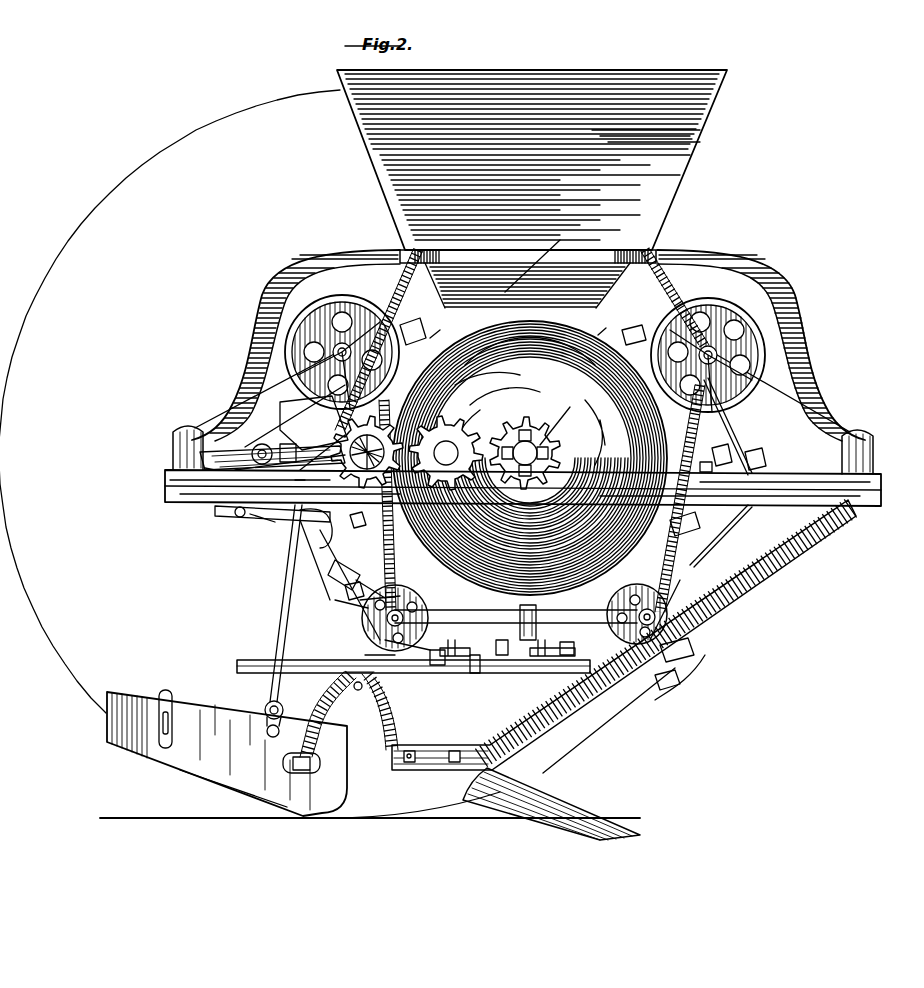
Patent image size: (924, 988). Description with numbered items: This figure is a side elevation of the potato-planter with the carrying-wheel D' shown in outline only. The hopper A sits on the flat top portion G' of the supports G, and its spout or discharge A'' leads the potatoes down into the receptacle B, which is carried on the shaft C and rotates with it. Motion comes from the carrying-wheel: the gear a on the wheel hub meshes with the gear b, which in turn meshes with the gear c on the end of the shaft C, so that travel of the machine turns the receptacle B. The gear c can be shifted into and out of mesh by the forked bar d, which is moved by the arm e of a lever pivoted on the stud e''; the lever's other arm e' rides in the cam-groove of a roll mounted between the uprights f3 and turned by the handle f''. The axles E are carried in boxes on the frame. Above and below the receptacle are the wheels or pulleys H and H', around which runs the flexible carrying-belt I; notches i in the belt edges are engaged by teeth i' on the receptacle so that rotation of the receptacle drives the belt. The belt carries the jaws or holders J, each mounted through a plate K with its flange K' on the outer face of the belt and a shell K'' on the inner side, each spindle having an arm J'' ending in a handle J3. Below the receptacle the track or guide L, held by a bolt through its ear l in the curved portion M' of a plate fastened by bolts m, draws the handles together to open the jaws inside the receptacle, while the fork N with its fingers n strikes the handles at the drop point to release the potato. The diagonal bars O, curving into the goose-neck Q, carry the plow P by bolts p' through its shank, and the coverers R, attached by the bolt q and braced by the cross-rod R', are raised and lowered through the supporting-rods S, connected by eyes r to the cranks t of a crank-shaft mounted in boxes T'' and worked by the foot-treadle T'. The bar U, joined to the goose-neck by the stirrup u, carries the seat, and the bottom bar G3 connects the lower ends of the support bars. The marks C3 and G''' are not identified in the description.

The hopper A is at (532, 160).
The spout A'' is at (537, 254).
The flat top portion of supports G' is at (603, 269).
The supports G is at (528, 345).
The wheels or pulleys H is at (527, 353).
The carrying-wheel D' is at (250, 454).
The flange or projection of plate K' is at (518, 450).
The plate K is at (523, 503).
The axles E is at (299, 486).
The carrying-belt I is at (544, 431).
The receptacle B is at (530, 458).
The gear a is at (367, 452).
The gear b is at (446, 453).
The gear c is at (525, 453).
The shaft C is at (560, 416).
The handle or lever f'' is at (241, 462).
The uprights f3 is at (275, 462).
The bar d is at (296, 416).
The arm of lever e' is at (264, 439).
The arm of lever e is at (288, 435).
The foot treadle or lever T' is at (246, 518).
The boxes T'' is at (240, 526).
The stud or pin e'' is at (291, 528).
The curved central portion of plate M' is at (513, 617).
The bolts m is at (532, 637).
The ear of track or guide l is at (528, 622).
The handle J3 is at (570, 584).
The bars U is at (413, 678).
The bar G3 is at (432, 668).
The goose-neck Q is at (354, 714).
The stirrup u is at (355, 697).
The bolt q is at (320, 763).
The bars O is at (624, 635).
The plow P is at (420, 762).
The bolts p' is at (419, 777).
The rod C3 is at (648, 690).
The coverers R is at (227, 754).
The cross-rod R' is at (167, 708).
The eye r is at (266, 717).
The supporting-rods S is at (280, 603).
The cranks t is at (300, 560).
The track or guide L is at (372, 570).
The arm J'' is at (341, 585).
The fork N is at (370, 584).
The fingers n is at (344, 614).
The companion wheels or pulleys H' is at (527, 643).
The jaws or holders J is at (544, 507).
The teeth or projections i' is at (431, 326).
The notches or recesses i is at (600, 323).
The shell K'' is at (723, 446).
The bracket G''' is at (703, 459).